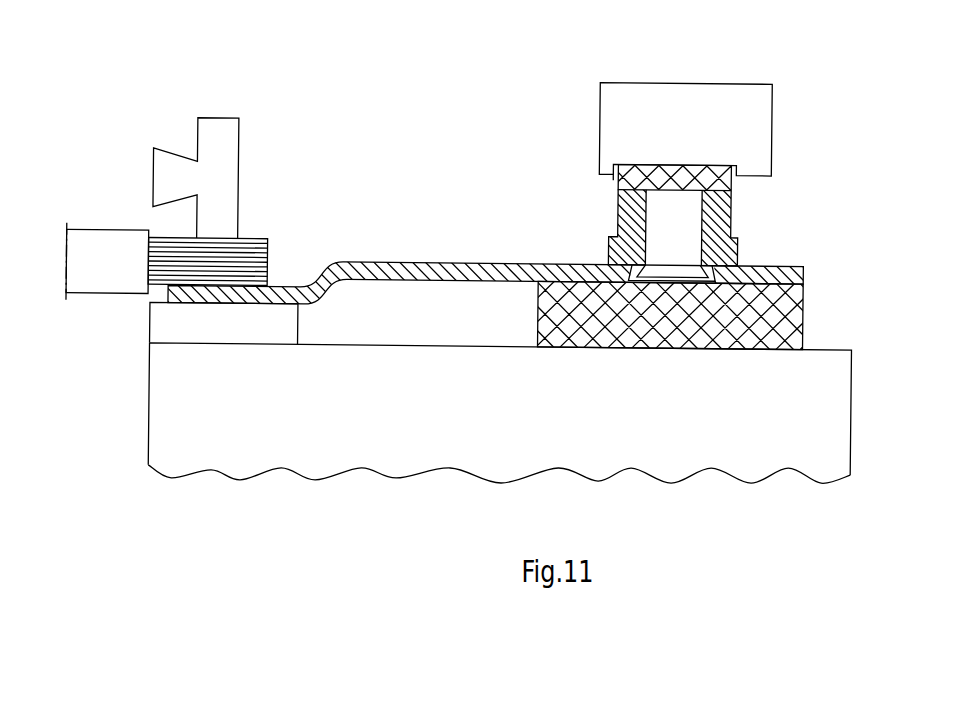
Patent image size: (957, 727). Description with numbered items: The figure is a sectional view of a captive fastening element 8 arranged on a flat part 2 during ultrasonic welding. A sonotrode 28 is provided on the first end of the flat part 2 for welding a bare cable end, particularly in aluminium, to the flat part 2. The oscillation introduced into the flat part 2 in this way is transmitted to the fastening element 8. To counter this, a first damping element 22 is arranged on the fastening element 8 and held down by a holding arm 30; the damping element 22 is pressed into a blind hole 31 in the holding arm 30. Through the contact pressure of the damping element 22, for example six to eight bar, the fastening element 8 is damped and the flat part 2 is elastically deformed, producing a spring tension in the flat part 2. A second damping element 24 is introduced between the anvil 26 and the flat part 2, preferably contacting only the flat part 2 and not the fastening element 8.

The flat part 2 is at (395, 269).
The fastening element 8 is at (717, 211).
The damping element 22 is at (693, 175).
The second damping element 24 is at (788, 319).
The anvil 26 is at (833, 400).
The sonotrode 28 is at (210, 138).
The holding arm 30 is at (627, 97).
The blind hole 31 is at (612, 179).